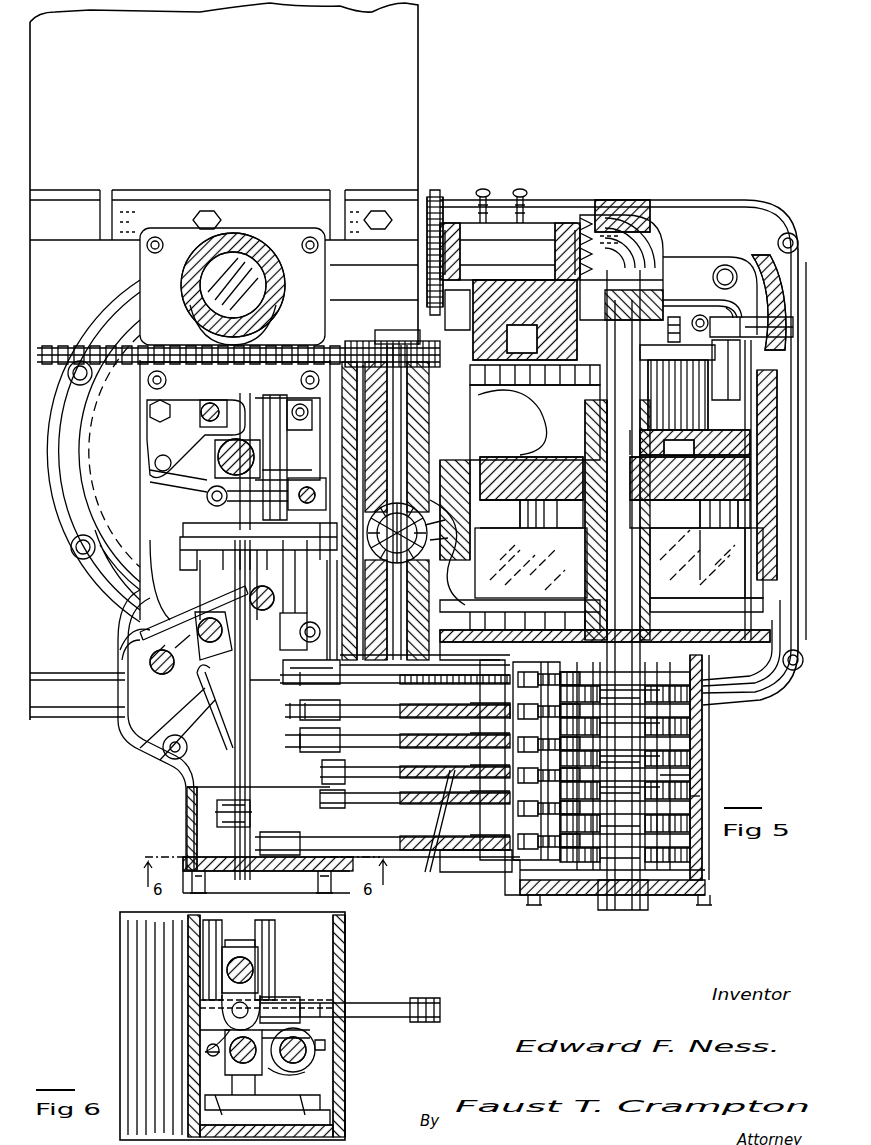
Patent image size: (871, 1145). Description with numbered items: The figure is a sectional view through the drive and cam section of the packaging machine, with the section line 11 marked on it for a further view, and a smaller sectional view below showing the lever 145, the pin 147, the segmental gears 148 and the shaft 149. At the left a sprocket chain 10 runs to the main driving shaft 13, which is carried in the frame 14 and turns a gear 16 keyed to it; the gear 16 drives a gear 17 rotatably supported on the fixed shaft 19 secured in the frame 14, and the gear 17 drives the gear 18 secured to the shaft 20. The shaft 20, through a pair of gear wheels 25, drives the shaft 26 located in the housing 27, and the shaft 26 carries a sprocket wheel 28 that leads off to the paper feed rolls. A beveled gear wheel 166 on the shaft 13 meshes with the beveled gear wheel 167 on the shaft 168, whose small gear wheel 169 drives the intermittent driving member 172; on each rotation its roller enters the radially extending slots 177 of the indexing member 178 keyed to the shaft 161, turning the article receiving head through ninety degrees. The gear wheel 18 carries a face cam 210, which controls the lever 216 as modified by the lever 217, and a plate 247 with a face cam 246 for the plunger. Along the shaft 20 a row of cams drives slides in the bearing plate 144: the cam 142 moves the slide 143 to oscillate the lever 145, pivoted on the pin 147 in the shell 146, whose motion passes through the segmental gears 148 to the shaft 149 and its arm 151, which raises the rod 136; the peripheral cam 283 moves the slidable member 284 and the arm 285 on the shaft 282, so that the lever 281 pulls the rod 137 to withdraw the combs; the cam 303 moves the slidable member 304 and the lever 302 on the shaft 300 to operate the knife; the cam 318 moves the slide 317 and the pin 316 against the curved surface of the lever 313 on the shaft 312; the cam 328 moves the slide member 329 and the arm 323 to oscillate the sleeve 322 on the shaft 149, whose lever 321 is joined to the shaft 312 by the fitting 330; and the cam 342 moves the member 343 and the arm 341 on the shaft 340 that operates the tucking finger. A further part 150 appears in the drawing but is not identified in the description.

In FIG. 5, the sprocket chain 10 is at (70, 348).
In FIG. 5, the shaft section line 11 is at (456, 336).
In FIG. 5, the main driving shaft 13 is at (358, 350).
In FIG. 5, the frame 14 is at (322, 348).
In FIG. 5, the gear 16 is at (410, 552).
In FIG. 5, the gear 17 is at (538, 528).
In FIG. 5, the gear 18 is at (560, 515).
In FIG. 5, the fixed shaft 19 is at (397, 340).
In FIG. 5, the shaft 20 is at (600, 430).
In FIG. 5, the pair of gear wheels 25 is at (625, 270).
In FIG. 5, the shaft 26 is at (530, 222).
In FIG. 5, the housing 27 is at (575, 230).
In FIG. 5, the sprocket wheel 28 is at (445, 210).
In FIG. 5, the rod 136 is at (210, 405).
In FIG. 5, the rod 137 is at (235, 510).
In FIG. 5, the cam 142 is at (702, 852).
In FIG. 5, the slide 143 is at (445, 872).
In FIG. 6, the slide 143 is at (340, 1005).
In FIG. 5, the bearing plate 144 is at (490, 870).
In FIG. 5, the lever 145 is at (198, 885).
In FIG. 6, the lever 145 is at (250, 1010).
In FIG. 5, the shell 146 is at (187, 815).
In FIG. 6, the shell 146 is at (137, 1000).
In FIG. 6, the pin 147 is at (250, 1060).
In FIG. 6, the segmental gears 148 is at (270, 1060).
In FIG. 5, the shaft 149 is at (330, 885).
In FIG. 6, the shaft 149 is at (318, 1050).
In FIG. 5, the pivot 150 is at (225, 470).
In FIG. 5, the arm 151 is at (275, 398).
In FIG. 5, the shaft 161 is at (265, 398).
In FIG. 5, the beveled gear wheel 166 is at (440, 518).
In FIG. 5, the beveled gear wheel 167 is at (510, 540).
In FIG. 5, the shaft 168 is at (332, 570).
In FIG. 5, the small gear wheel 169 is at (395, 670).
In FIG. 5, the intermittent driving member 172 is at (515, 375).
In FIG. 5, the radially extending slots 177 is at (150, 484).
In FIG. 5, the rotatable indexing member 178 is at (150, 472).
In FIG. 5, the face cam 210 is at (700, 452).
In FIG. 5, the lever 216 is at (700, 435).
In FIG. 5, the lever 217 is at (760, 265).
In FIG. 5, the face cam 246 is at (705, 535).
In FIG. 5, the plate 247 is at (640, 530).
In FIG. 5, the lever 281 is at (207, 500).
In FIG. 5, the shaft 282 is at (226, 748).
In FIG. 6, the shaft 282 is at (205, 972).
In FIG. 5, the peripheral cam 283 is at (700, 808).
In FIG. 5, the slidable member 284 is at (425, 860).
In FIG. 5, the arm 285 is at (215, 815).
In FIG. 6, the arm 285 is at (252, 965).
In FIG. 5, the shaft 300 is at (232, 580).
In FIG. 6, the shaft 300 is at (272, 942).
In FIG. 5, the lever 302 is at (185, 597).
In FIG. 5, the cam 303 is at (690, 703).
In FIG. 5, the slidable member 304 is at (450, 680).
In FIG. 5, the shaft 312 is at (130, 620).
In FIG. 6, the shaft 312 is at (205, 935).
In FIG. 5, the lever 313 is at (135, 720).
In FIG. 5, the pin 316 is at (227, 752).
In FIG. 5, the slide 317 is at (512, 668).
In FIG. 5, the cam 318 is at (688, 730).
In FIG. 5, the lever 321 is at (150, 648).
In FIG. 6, the lever 321 is at (215, 1045).
In FIG. 5, the sleeve 322 is at (330, 740).
In FIG. 5, the arm 323 is at (330, 798).
In FIG. 6, the arm 323 is at (300, 1030).
In FIG. 5, the cam 328 is at (690, 780).
In FIG. 5, the slide member 329 is at (410, 775).
In FIG. 6, the slide member 329 is at (320, 1000).
In FIG. 6, the fitting 330 is at (205, 1052).
In FIG. 5, the shaft 340 is at (148, 662).
In FIG. 5, the arm 341 is at (150, 745).
In FIG. 5, the cam 342 is at (688, 745).
In FIG. 5, the member 343 is at (410, 842).